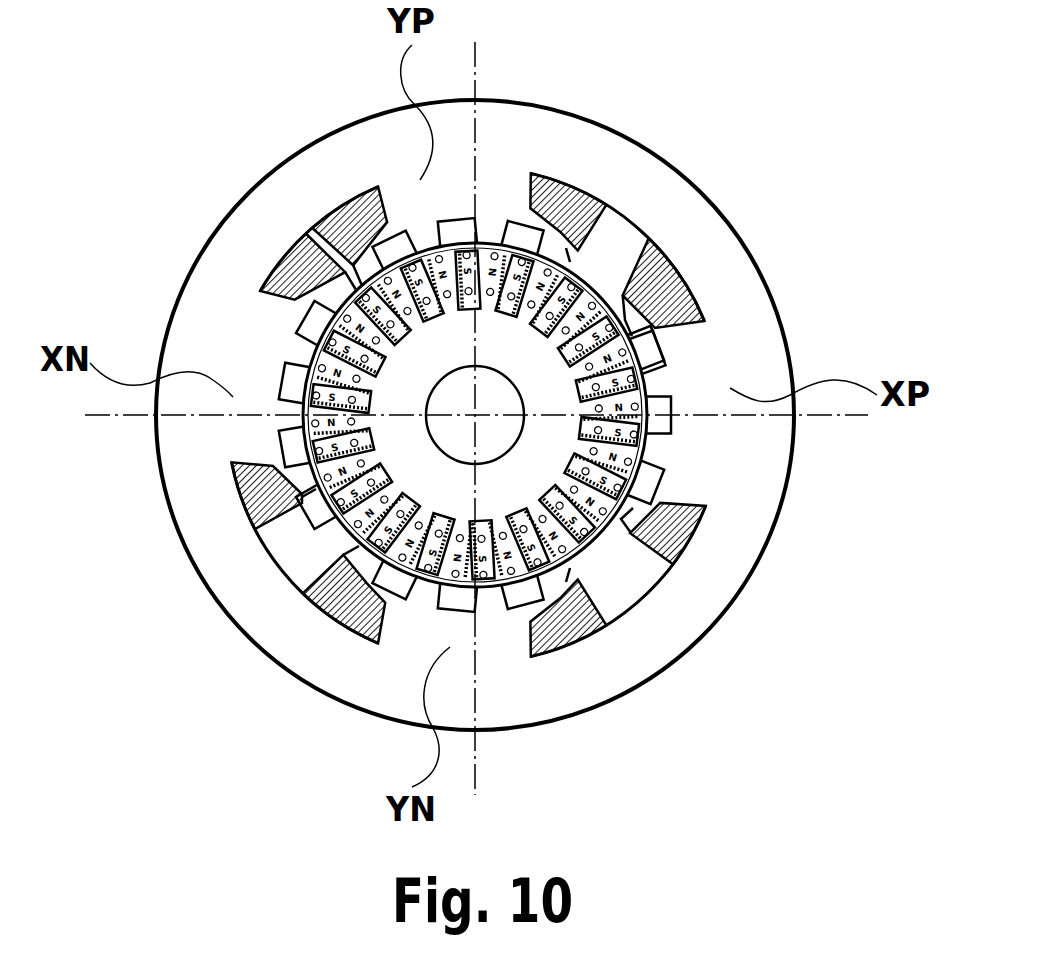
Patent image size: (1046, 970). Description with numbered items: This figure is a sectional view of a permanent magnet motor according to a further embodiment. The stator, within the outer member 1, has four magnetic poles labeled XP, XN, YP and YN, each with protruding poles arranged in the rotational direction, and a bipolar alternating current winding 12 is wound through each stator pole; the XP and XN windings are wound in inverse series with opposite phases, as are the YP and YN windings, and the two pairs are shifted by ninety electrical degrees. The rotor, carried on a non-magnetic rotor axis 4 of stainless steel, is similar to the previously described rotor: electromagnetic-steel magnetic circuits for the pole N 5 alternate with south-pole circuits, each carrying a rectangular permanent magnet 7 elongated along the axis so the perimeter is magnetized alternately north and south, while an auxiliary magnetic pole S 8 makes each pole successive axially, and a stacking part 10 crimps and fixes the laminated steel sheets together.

The stator housing 1 is at (500, 142).
The non-magnetic rotor axis 4 is at (493, 428).
The magnetic circuit for the pole N 5 is at (603, 293).
The permanent magnet 7 is at (643, 398).
The auxiliary magnetic pole S 8 is at (667, 260).
The stacking part 10 is at (655, 350).
The bipolar alternating current winding 12 is at (597, 190).